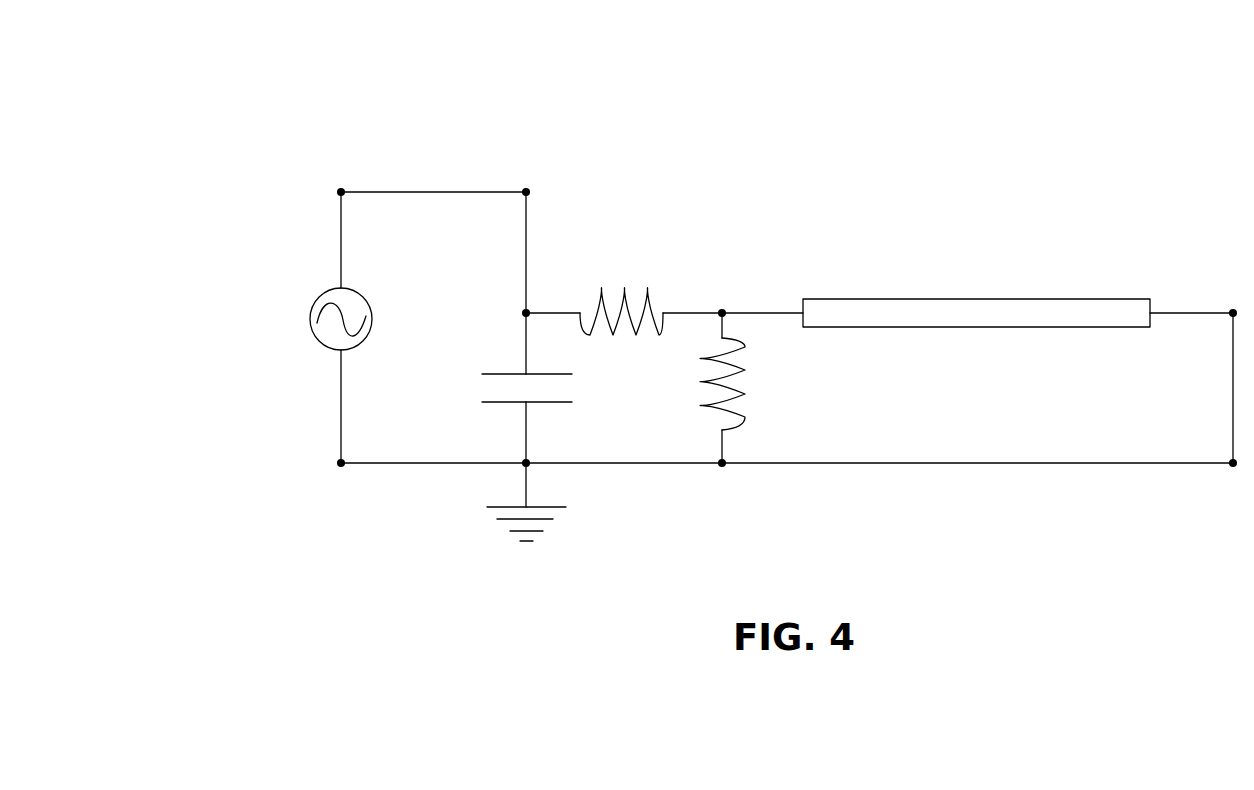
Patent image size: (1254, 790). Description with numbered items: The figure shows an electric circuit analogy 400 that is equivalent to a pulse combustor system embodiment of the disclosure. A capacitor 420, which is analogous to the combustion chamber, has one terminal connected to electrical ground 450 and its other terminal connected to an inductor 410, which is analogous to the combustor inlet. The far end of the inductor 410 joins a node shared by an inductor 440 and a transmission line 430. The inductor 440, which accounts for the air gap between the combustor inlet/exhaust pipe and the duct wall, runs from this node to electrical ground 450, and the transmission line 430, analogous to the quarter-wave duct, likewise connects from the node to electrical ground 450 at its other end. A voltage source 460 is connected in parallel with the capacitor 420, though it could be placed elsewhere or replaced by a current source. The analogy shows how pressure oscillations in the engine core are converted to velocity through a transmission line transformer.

The electric circuit analogy 400 is at (307, 211).
The inductor 410 is at (600, 292).
The capacitor 420 is at (508, 374).
The transmission line 430 is at (876, 299).
The inductor 440 is at (745, 393).
The electrical ground 450 is at (493, 506).
The voltage source 460 is at (333, 292).